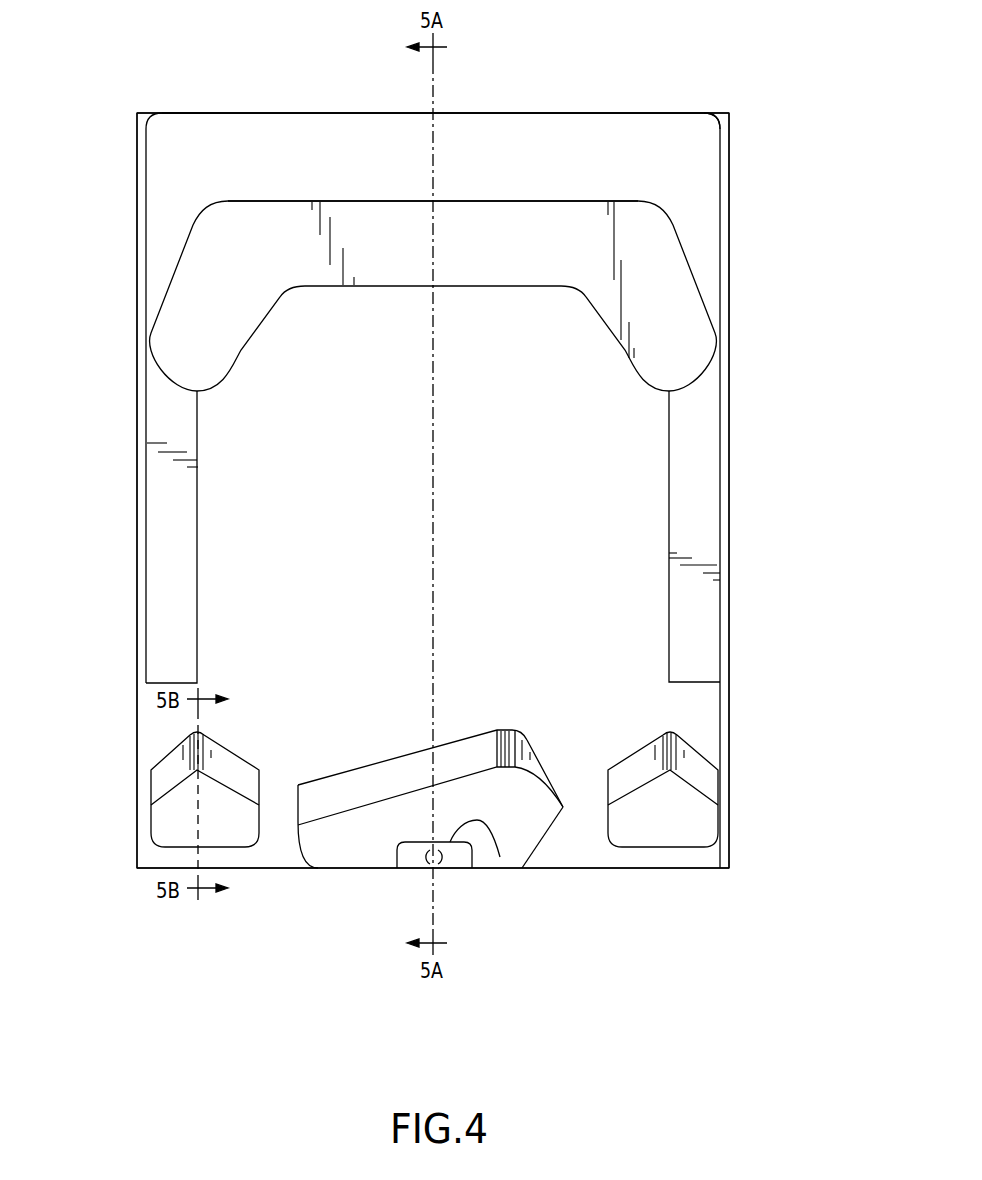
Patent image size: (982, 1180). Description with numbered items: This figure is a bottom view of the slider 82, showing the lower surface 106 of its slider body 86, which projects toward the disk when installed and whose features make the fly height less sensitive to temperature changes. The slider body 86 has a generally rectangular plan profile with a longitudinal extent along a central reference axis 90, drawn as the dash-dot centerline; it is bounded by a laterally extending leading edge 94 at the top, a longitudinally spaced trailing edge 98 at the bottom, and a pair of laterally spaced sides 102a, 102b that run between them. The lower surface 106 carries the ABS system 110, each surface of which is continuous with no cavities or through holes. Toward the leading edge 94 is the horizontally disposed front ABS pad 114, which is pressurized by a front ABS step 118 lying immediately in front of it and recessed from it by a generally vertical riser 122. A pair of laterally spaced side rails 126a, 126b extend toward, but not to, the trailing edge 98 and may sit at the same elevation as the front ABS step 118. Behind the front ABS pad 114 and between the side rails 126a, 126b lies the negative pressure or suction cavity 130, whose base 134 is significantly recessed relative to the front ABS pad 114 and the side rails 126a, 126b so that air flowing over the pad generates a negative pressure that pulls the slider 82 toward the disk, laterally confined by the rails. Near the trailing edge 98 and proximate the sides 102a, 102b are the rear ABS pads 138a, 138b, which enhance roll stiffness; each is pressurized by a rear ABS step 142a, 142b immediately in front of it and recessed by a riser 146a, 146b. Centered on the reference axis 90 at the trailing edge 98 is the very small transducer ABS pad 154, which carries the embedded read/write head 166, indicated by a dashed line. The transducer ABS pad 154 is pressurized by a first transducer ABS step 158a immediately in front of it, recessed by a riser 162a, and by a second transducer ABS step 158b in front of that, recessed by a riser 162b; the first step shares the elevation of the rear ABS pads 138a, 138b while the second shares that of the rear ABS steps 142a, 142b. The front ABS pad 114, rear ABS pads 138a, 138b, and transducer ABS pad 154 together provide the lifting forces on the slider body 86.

The slider 82 is at (768, 84).
The slider body 86 is at (729, 155).
The leading edge 94 is at (522, 113).
The trailing edge 98 is at (597, 870).
The side 102a is at (137, 448).
The side 102b is at (730, 452).
The central reference axis 90 is at (438, 456).
The lower surface 106 is at (243, 150).
The ABS system 110 is at (618, 168).
The front ABS pad 114 is at (480, 253).
The front ABS step 118 is at (422, 163).
The riser 122 is at (455, 200).
The side rail 126a is at (177, 488).
The side rail 126b is at (693, 477).
The negative pressure cavity 130 is at (585, 608).
The base 134 is at (395, 533).
The rear ABS pad 138a is at (218, 828).
The rear ABS pad 138b is at (680, 828).
The rear ABS step 142a is at (207, 753).
The rear ABS step 142b is at (678, 757).
The riser 146a is at (230, 780).
The riser 146b is at (692, 777).
The transducer ABS pad 154 is at (415, 853).
The first transducer ABS step 158a is at (513, 811).
The second transducer ABS step 158b is at (482, 768).
The riser 162a is at (500, 857).
The riser 162b is at (496, 765).
The read/write head 166 is at (438, 863).